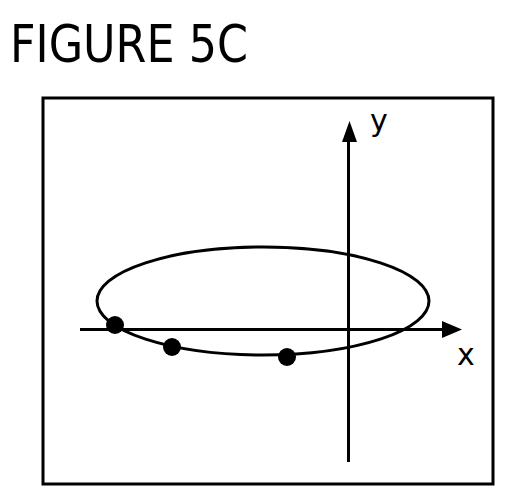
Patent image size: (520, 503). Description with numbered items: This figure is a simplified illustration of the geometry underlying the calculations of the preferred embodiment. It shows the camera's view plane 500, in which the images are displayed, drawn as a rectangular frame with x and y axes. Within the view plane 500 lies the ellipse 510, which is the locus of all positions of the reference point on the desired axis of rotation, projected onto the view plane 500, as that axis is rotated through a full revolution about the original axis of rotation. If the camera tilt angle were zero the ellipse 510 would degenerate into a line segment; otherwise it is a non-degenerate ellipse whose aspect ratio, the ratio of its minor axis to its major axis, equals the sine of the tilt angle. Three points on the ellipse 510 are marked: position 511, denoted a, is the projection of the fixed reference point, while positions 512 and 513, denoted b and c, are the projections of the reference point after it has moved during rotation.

The view plane 500 is at (205, 133).
The ellipse 510 is at (195, 253).
The projected position of reference point a 511 is at (280, 363).
The projected position of point b 512 is at (166, 356).
The projected position of point c 513 is at (112, 334).